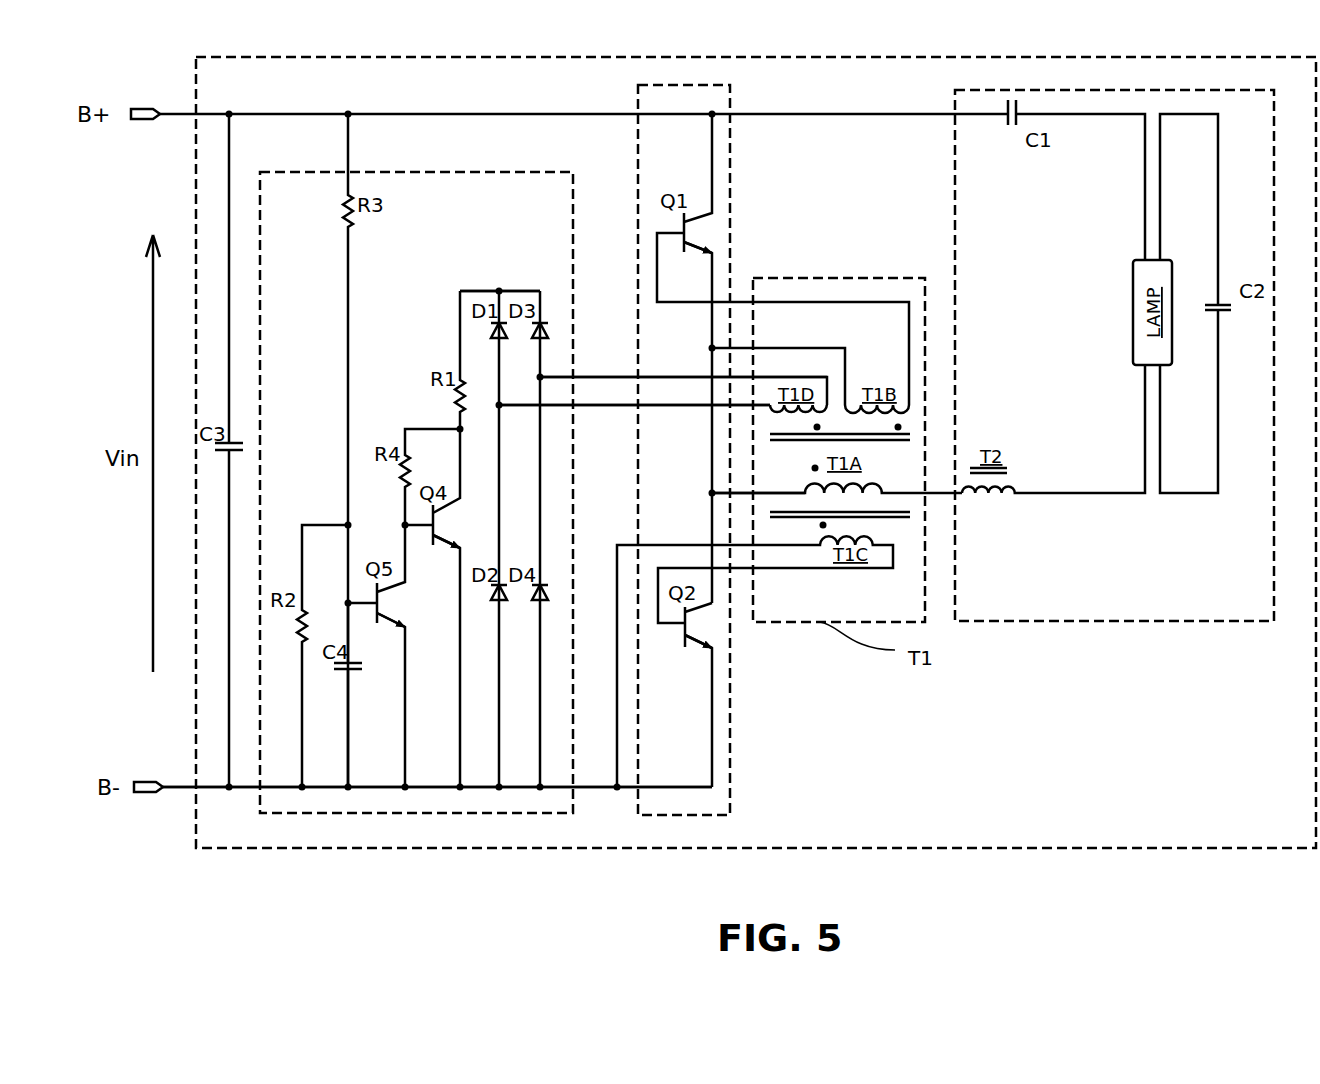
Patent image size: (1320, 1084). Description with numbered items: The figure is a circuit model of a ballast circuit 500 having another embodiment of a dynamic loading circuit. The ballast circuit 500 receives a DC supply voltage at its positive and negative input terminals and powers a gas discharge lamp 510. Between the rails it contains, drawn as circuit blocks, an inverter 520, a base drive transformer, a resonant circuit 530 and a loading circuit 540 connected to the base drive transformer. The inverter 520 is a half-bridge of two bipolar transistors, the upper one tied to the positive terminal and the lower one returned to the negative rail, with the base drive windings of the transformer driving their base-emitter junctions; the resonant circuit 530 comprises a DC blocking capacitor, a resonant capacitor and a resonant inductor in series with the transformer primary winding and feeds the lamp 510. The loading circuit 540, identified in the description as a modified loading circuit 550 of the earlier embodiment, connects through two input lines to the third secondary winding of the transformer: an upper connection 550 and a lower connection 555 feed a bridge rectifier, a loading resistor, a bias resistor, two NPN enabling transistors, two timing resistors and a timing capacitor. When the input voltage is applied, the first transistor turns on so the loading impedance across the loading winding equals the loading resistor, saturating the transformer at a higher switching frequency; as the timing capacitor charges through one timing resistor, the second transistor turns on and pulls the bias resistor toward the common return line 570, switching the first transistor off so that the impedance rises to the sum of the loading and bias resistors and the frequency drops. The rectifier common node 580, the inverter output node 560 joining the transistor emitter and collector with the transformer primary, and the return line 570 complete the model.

The ballast circuit 500 is at (860, 848).
The gas discharge lamp 510 is at (1133, 302).
The inverter 520 is at (733, 745).
The resonant circuit 530 is at (1085, 621).
The loading circuit 540 is at (455, 818).
The loading circuit 550 is at (583, 376).
The second feedback line 555 is at (582, 407).
The inverter output node 560 is at (711, 528).
The ground reference line 570 is at (433, 787).
The rectifier common node 580 is at (467, 290).